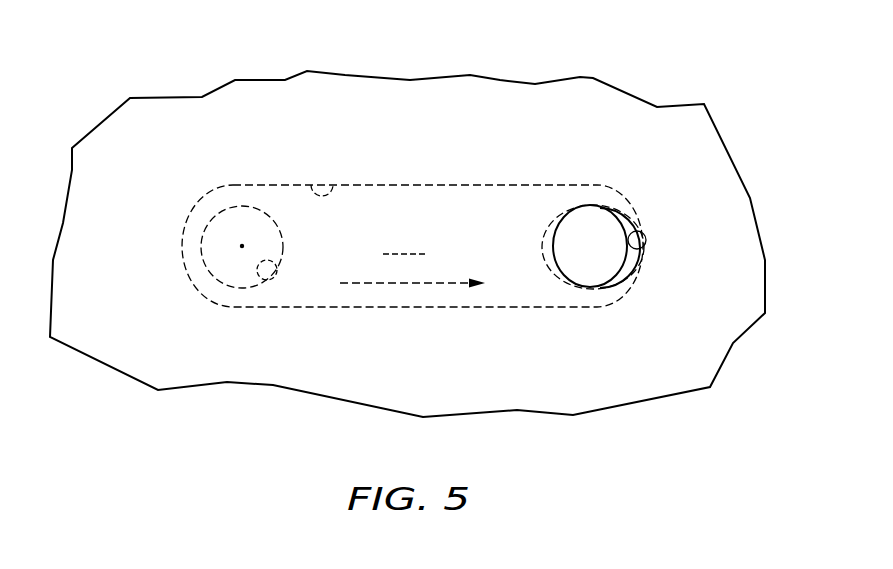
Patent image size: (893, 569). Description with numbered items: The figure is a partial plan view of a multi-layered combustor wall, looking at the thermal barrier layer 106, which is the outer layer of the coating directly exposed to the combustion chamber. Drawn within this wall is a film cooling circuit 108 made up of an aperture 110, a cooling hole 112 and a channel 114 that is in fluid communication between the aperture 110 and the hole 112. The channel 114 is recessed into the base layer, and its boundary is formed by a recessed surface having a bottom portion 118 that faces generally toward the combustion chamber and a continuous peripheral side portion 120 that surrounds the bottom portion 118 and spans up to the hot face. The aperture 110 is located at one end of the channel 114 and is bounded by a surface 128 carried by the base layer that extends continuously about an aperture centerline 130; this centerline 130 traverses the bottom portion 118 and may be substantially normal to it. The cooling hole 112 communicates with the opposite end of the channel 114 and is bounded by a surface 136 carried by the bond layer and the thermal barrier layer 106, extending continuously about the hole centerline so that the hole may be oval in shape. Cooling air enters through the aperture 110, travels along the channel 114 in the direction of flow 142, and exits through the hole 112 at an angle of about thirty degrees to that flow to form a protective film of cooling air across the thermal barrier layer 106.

The thermal barrier layer 106 is at (583, 108).
The cooling circuit 108 is at (692, 70).
The aperture 110 is at (200, 260).
The cooling hole 112 is at (595, 245).
The channel 114 is at (405, 241).
The bottom portion 118 is at (458, 205).
The side portion 120 is at (332, 183).
The surface 128 is at (278, 273).
The aperture centerline 130 is at (242, 246).
The surface 136 is at (645, 247).
The direction of flow 142 is at (412, 283).